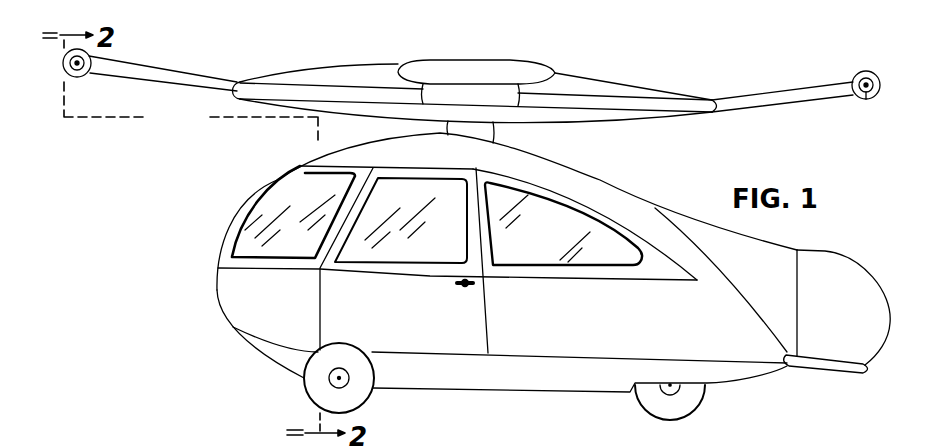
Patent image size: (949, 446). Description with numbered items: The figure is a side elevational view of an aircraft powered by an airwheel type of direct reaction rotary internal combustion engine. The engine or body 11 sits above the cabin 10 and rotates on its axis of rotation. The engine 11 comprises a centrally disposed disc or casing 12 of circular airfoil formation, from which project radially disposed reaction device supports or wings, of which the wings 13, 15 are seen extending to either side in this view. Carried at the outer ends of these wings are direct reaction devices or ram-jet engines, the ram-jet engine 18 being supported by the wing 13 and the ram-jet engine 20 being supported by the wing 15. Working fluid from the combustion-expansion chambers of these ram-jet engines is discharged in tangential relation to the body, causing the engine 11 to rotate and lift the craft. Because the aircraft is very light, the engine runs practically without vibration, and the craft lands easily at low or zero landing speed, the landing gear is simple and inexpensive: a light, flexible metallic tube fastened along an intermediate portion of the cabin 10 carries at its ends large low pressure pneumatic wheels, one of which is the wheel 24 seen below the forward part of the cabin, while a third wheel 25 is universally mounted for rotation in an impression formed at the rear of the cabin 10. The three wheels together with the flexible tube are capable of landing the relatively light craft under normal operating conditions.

The cabin 10 is at (288, 324).
The direct reaction rotary translation internal combustion engine or airwheel 11 is at (592, 122).
The centrally disposed disc or casing 12 is at (665, 113).
The reaction device support or wing 13 is at (768, 100).
The reaction device support or wing 15 is at (168, 83).
The direct reaction device or ram-jet engine 18 is at (880, 97).
The direct reaction device or ram-jet engine 20 is at (79, 77).
The large low pressure pneumatic wheel 24 is at (312, 390).
The third wheel 25 is at (688, 403).